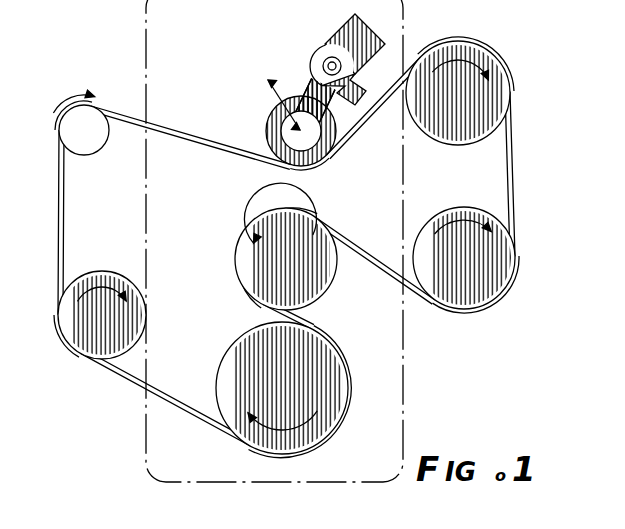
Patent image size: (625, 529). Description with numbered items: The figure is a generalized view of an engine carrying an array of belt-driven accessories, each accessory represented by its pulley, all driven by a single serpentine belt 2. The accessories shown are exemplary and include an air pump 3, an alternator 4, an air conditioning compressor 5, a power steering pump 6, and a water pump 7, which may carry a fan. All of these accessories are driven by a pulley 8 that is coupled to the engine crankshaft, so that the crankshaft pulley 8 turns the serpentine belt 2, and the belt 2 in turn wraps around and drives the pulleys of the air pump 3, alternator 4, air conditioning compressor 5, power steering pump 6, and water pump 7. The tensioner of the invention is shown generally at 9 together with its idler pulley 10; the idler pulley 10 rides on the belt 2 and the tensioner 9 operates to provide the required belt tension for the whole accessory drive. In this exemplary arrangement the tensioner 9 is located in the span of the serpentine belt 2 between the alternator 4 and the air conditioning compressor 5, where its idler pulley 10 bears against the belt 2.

The serpentine belt 2 is at (514, 157).
The air pump 3 is at (80, 334).
The alternator 4 is at (63, 116).
The air conditioning compressor 5 is at (510, 80).
The power steering pump 6 is at (511, 243).
The water pump 7 is at (331, 283).
The pulley 8 is at (330, 373).
The tensioner 9 is at (320, 43).
The idler pulley 10 is at (272, 112).